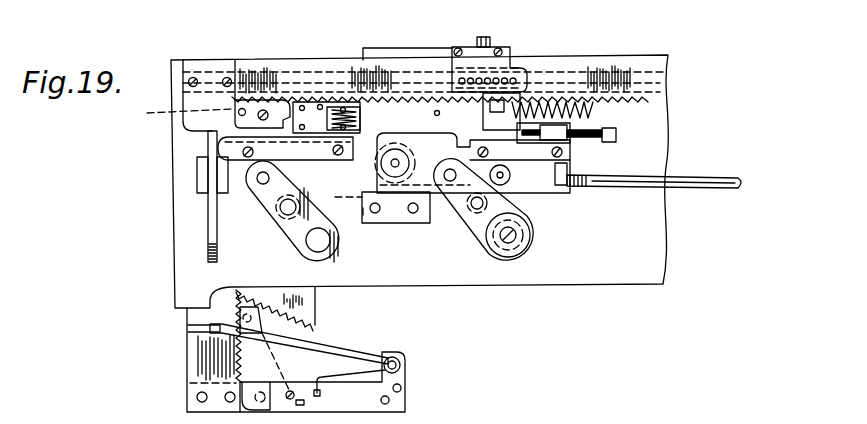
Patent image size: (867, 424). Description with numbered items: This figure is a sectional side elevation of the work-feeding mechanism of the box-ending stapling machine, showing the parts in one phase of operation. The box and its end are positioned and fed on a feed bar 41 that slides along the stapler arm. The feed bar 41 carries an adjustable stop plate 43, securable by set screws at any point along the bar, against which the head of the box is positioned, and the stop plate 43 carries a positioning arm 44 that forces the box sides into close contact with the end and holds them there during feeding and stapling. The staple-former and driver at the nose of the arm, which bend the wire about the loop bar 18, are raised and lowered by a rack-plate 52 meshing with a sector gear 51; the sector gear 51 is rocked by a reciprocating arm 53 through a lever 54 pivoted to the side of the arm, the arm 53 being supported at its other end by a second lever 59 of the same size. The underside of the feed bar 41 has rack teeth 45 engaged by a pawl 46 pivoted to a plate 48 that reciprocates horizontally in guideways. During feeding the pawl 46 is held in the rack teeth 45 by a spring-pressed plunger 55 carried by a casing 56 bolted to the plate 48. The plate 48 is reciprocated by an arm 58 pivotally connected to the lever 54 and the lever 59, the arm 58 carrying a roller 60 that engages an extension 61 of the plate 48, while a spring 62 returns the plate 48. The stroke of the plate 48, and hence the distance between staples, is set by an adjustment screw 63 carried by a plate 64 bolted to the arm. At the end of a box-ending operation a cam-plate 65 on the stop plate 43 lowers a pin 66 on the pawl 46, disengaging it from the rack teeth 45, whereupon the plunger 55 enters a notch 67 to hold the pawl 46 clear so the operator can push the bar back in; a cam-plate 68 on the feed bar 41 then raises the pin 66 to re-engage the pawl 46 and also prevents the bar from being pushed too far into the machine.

The loop bar 18 is at (210, 217).
The feed bar 41 is at (304, 44).
The adjustable stop plate 43 is at (457, 48).
The positioning arm 44 is at (377, 54).
The rack teeth 45 is at (368, 120).
The pawl 46 is at (174, 112).
The plate 48 is at (437, 112).
The sector gear 51 is at (300, 300).
The rack-plate 52 is at (200, 352).
The reciprocating arm 53 is at (422, 175).
The lever 54 is at (280, 232).
The spring-pressed plunger 55 is at (340, 160).
The casing 56 is at (320, 105).
The arm 58 is at (392, 213).
The lever 59 is at (510, 210).
The roller 60 is at (395, 150).
The extension 61 is at (363, 212).
The spring 62 is at (592, 112).
The adjustment screw 63 is at (598, 138).
The plate 64 is at (513, 150).
The cam-plate 65 is at (480, 92).
The pin 66 is at (240, 115).
The notch 67 is at (280, 123).
The cam-plate 68 is at (193, 120).